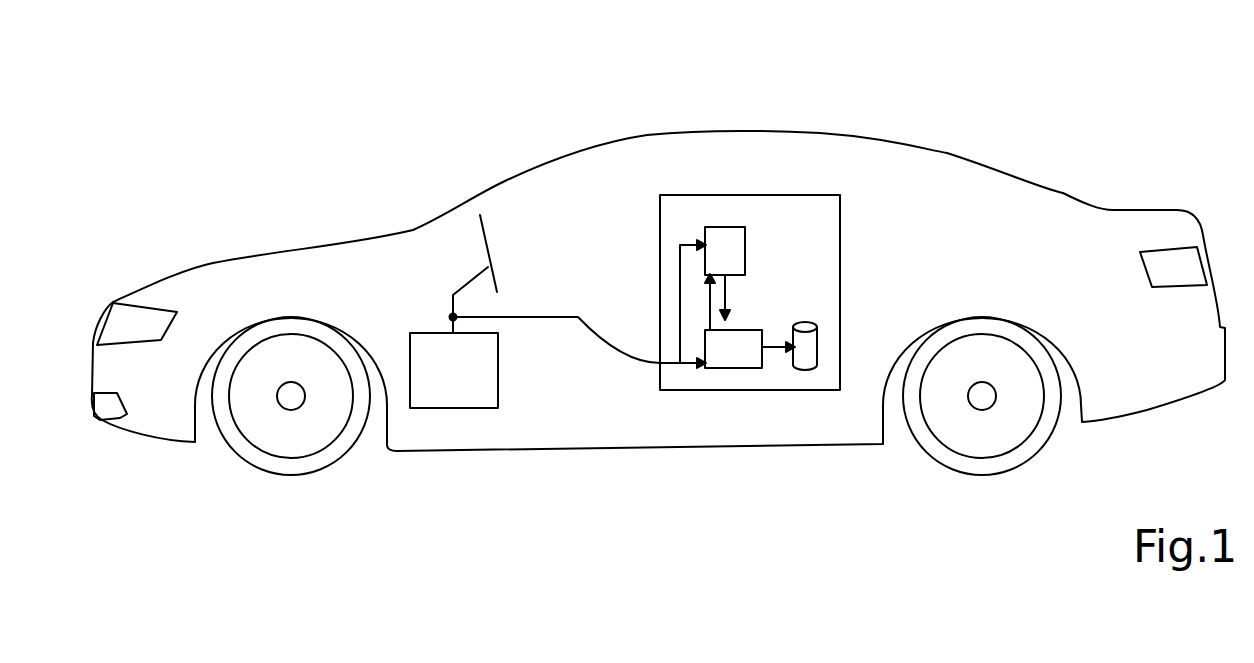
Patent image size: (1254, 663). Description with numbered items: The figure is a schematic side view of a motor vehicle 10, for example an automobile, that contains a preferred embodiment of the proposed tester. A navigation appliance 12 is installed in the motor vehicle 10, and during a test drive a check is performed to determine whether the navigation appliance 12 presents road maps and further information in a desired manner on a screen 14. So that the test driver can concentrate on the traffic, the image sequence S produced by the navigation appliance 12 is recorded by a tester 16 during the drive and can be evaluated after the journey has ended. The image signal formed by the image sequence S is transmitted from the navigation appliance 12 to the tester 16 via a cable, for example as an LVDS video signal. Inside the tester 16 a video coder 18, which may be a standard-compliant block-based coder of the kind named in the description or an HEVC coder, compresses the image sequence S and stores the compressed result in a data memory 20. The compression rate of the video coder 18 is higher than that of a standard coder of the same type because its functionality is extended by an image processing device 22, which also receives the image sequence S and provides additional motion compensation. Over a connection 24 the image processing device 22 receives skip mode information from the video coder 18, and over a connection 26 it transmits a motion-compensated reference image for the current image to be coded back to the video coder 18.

The motor vehicle 10 is at (822, 133).
The navigation appliance 12 is at (498, 387).
The screen 14 is at (487, 243).
The tester 16 is at (732, 195).
The video coder 18 is at (733, 368).
The data memory 20 is at (817, 338).
The image processing device 22 is at (747, 252).
The connection 24 is at (708, 312).
The connection 26 is at (727, 295).
The image sequence S is at (618, 352).